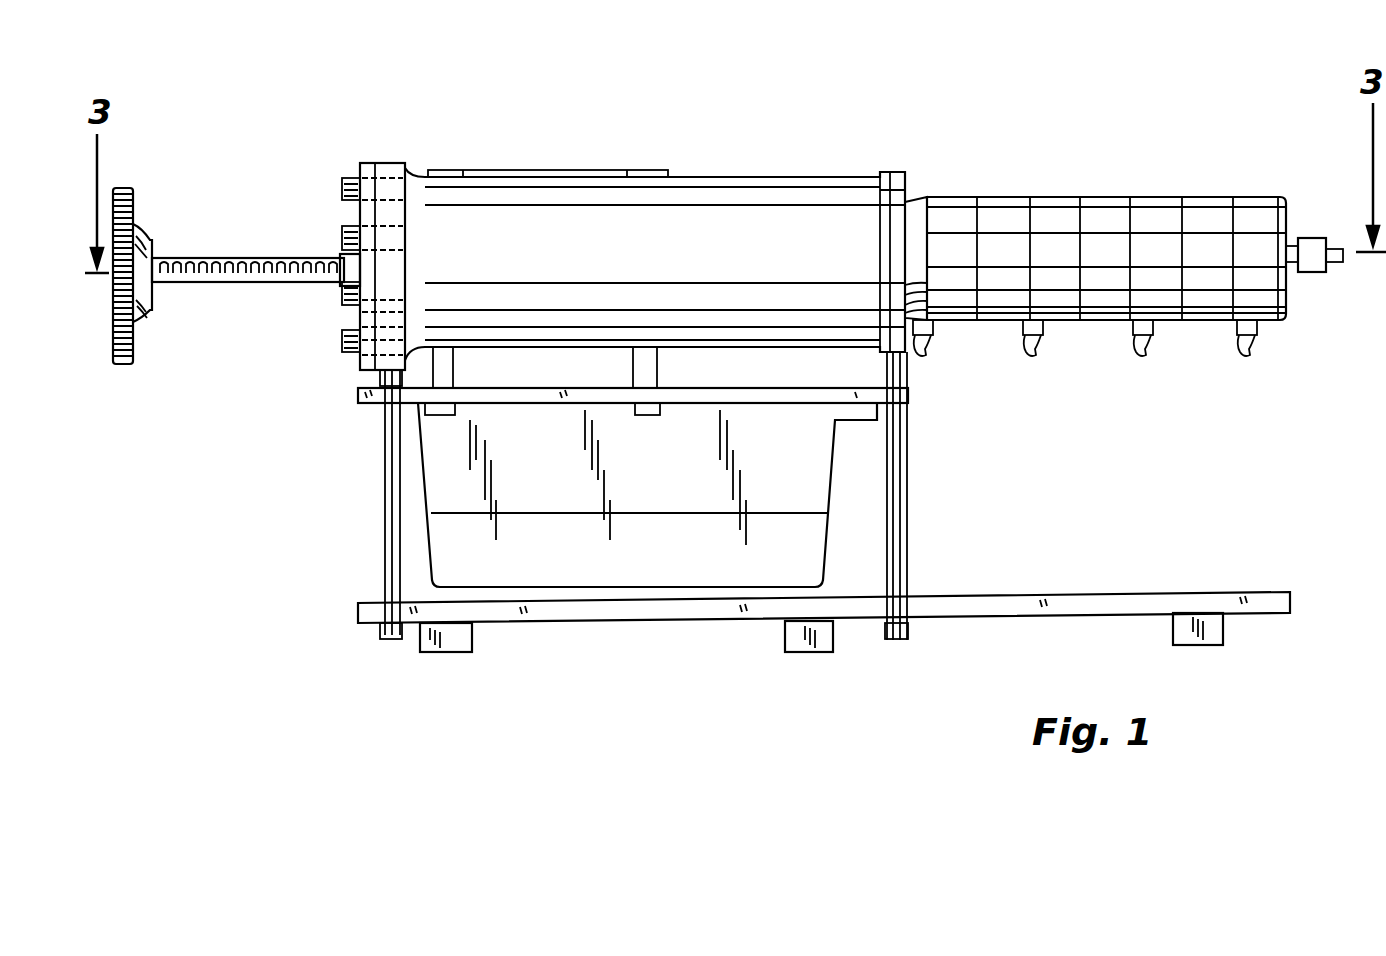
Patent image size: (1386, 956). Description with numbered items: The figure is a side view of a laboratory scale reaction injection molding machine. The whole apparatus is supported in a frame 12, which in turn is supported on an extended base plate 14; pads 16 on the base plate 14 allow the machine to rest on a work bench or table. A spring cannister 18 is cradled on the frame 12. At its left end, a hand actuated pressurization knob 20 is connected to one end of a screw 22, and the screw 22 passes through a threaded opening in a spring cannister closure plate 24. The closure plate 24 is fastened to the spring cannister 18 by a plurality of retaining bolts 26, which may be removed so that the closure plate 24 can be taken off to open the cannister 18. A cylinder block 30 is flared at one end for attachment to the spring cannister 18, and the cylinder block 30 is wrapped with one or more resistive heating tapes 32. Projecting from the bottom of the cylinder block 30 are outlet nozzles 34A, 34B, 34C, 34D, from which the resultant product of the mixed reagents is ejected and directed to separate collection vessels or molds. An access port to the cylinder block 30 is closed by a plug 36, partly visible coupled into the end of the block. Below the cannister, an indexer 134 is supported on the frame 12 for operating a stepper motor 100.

The frame 12 is at (388, 460).
The base plate 14 is at (1172, 600).
The pads 16 is at (452, 640).
The spring cannister 18 is at (685, 195).
The pressurization knob 20 is at (135, 205).
The screw 22 is at (200, 258).
The spring cannister closure plate 24 is at (368, 155).
The retaining bolts 26 is at (344, 190).
The cylinder block 30 is at (912, 208).
The resistive heating tapes 32 is at (1040, 205).
The outlet nozzle 34A is at (1250, 352).
The outlet nozzle 34B is at (1146, 352).
The outlet nozzle 34C is at (1036, 352).
The outlet nozzle 34D is at (926, 352).
The plug 36 is at (1320, 274).
The stepper motor 100 is at (555, 172).
The indexer 134 is at (808, 481).